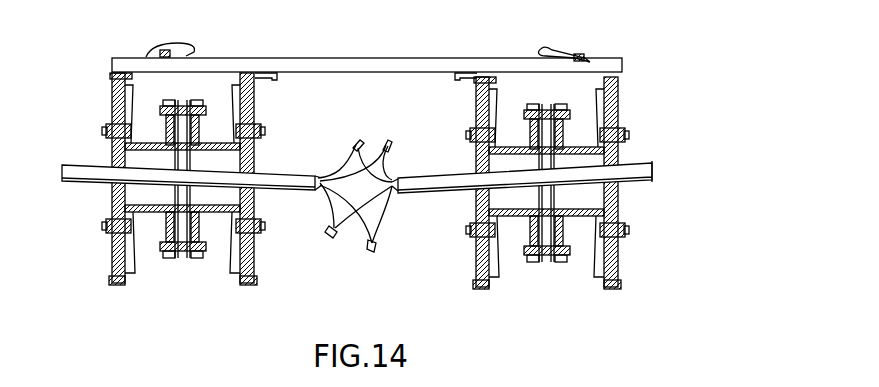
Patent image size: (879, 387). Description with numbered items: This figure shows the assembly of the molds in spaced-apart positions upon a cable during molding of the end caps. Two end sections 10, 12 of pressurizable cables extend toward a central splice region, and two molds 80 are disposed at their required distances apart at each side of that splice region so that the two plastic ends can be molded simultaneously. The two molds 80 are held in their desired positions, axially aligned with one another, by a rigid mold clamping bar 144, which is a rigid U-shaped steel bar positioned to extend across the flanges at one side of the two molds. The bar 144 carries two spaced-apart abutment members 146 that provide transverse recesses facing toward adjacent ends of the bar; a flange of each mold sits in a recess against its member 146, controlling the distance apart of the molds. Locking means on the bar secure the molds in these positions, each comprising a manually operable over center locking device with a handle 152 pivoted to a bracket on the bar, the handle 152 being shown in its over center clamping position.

The end section of pressurizable cable 10 is at (296, 174).
The end section of pressurizable cable 12 is at (444, 178).
The mold 80 is at (205, 262).
The mold clamping bar 144 is at (416, 58).
The abutment member 146 is at (267, 79).
The handle 152 is at (196, 46).